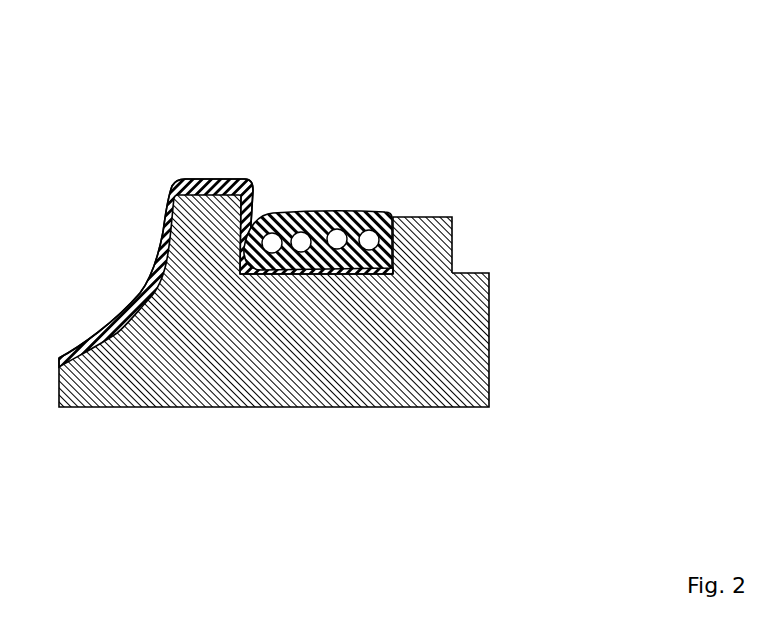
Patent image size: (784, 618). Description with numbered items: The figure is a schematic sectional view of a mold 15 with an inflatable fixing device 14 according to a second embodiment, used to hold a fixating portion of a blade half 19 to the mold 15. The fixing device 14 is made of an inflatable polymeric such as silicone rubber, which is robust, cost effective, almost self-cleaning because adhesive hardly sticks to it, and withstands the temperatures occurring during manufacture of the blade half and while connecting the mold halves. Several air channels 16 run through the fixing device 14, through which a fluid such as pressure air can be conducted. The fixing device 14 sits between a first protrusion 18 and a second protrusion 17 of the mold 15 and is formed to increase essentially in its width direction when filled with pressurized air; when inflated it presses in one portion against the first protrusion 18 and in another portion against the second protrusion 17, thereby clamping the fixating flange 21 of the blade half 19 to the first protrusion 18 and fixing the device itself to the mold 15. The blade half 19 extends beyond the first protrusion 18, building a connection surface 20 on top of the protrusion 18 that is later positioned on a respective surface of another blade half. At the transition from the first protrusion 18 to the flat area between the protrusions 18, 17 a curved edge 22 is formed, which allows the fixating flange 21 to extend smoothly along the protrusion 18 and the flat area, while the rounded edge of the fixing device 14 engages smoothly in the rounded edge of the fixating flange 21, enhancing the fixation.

The fixing device 14 is at (362, 116).
The mold 15 is at (490, 352).
The air channels 16 is at (367, 217).
The second protrusion 17 is at (440, 217).
The first protrusion 18 is at (193, 178).
The blade half 19 is at (78, 247).
The connection surface 20 is at (168, 193).
The fixating flange 21 is at (294, 290).
The curved edge 22 is at (235, 283).